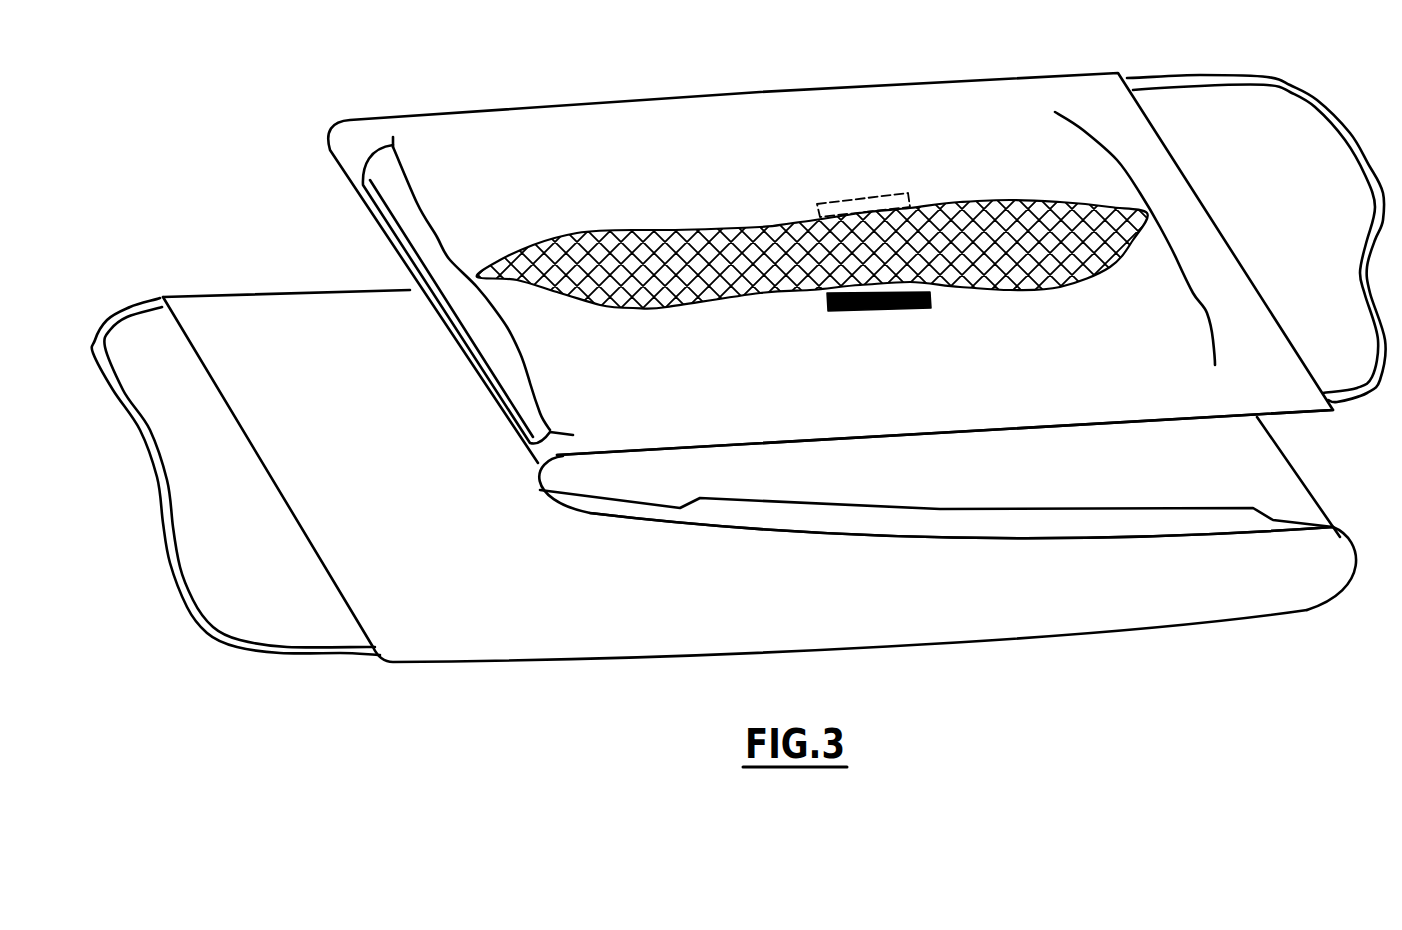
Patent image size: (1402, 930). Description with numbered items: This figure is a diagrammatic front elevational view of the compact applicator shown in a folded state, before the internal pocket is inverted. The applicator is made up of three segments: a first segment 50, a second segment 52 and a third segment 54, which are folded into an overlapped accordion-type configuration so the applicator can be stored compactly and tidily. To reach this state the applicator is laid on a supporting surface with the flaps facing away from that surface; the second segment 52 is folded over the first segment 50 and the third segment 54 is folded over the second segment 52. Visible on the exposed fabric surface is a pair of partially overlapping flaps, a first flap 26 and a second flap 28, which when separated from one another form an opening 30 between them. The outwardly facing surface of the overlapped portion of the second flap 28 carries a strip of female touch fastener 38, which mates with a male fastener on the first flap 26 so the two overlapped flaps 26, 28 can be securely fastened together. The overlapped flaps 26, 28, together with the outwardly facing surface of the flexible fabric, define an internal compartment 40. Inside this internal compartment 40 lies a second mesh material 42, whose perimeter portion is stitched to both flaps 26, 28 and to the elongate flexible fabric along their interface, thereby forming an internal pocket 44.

The first flap 26 is at (937, 104).
The second flap 28 is at (748, 400).
The opening 30 is at (977, 197).
The female touch fastener 38 is at (915, 311).
The internal compartment 40 is at (633, 243).
The second mesh material 42 is at (672, 257).
The internal pocket 44 is at (1027, 270).
The first segment 50 is at (537, 660).
The second segment 52 is at (1083, 540).
The third segment 54 is at (1160, 423).